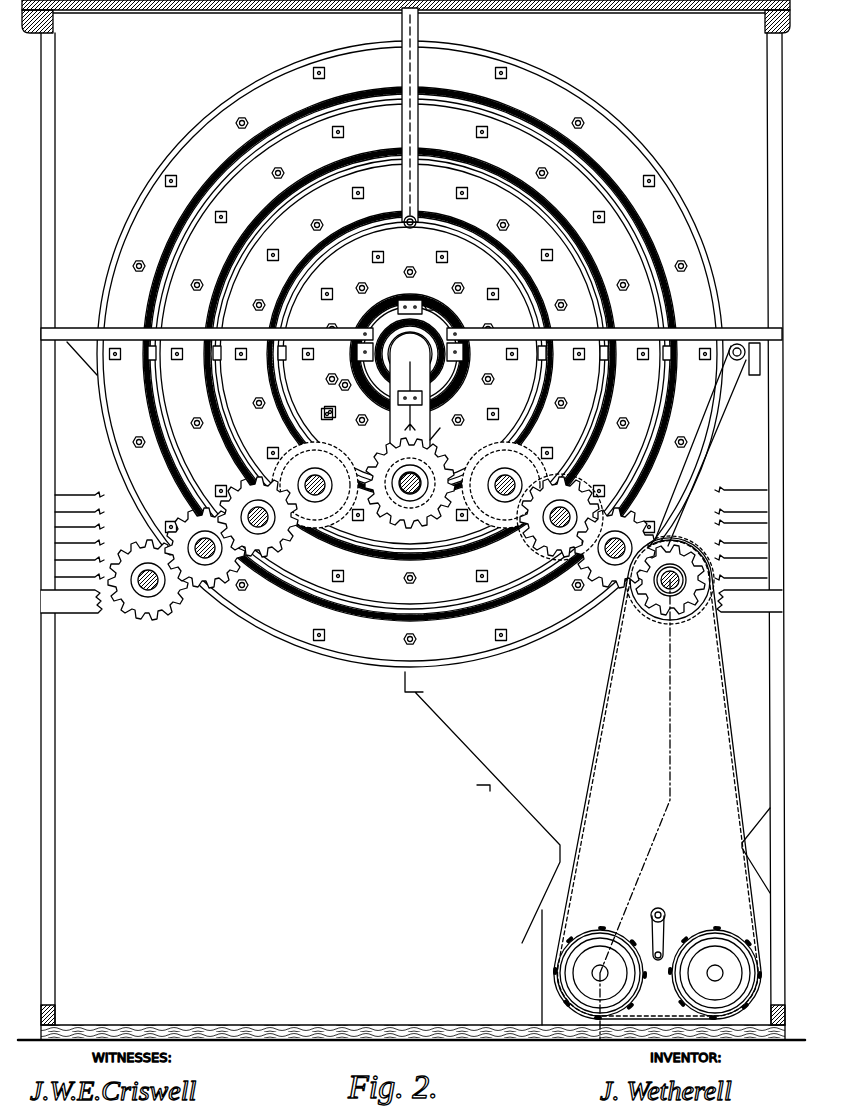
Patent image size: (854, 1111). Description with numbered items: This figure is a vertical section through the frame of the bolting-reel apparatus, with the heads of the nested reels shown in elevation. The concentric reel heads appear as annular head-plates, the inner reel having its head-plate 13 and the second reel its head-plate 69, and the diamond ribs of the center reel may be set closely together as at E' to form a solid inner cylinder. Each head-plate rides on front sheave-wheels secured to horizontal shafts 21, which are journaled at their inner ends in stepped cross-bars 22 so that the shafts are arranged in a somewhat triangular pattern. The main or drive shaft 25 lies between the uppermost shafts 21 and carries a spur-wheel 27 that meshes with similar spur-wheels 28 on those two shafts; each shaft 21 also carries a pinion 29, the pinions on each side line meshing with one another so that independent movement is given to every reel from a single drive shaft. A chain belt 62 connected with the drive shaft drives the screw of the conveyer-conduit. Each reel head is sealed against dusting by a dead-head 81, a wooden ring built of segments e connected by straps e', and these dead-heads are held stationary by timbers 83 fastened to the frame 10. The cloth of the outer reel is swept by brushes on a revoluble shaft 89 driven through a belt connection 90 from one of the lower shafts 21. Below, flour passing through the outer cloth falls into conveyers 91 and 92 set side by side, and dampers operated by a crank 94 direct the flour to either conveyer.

The frame 10 is at (419, 520).
The head-plate 13 is at (410, 230).
The horizontal shaft 21 is at (150, 590).
The stepped cross-bar 22 is at (97, 483).
The main or drive shaft 25 is at (410, 495).
The spur-wheel 27 is at (410, 414).
The spur-wheel 28 is at (330, 458).
The pinion 29 is at (280, 435).
The chain belt 62 is at (448, 422).
The head-plate 69 is at (410, 354).
The dead-head 81 is at (437, 353).
The timber 83 is at (406, 73).
The revoluble shaft 89 is at (737, 343).
The belt connection 90 is at (742, 414).
The conveyer 91 is at (585, 930).
The conveyer 92 is at (700, 930).
The crank 94 is at (668, 908).
The segment e is at (309, 342).
The strap e' is at (325, 371).
The trough-like diamond ribs E' is at (323, 399).